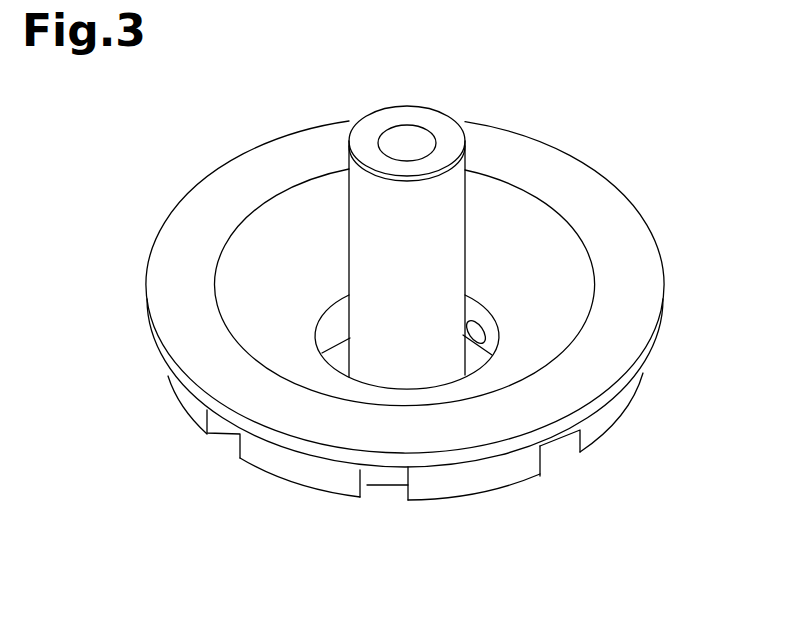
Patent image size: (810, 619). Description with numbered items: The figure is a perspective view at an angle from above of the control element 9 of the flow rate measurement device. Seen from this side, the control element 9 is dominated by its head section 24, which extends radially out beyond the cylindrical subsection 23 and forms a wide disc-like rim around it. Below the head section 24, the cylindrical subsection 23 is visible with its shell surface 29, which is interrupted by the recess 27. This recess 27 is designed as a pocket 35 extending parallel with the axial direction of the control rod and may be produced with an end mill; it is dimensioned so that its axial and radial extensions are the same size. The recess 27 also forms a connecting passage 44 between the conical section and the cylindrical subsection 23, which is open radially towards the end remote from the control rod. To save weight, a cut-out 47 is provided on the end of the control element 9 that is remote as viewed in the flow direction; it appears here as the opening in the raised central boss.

The control element 9 is at (615, 117).
The head section 24 is at (678, 325).
The cut-out 47 is at (503, 297).
The cylindrical subsection 23 is at (612, 413).
The shell surface 29 is at (442, 485).
The recess 27 is at (601, 502).
The pocket 35 is at (601, 502).
The connecting passage 44 is at (563, 462).